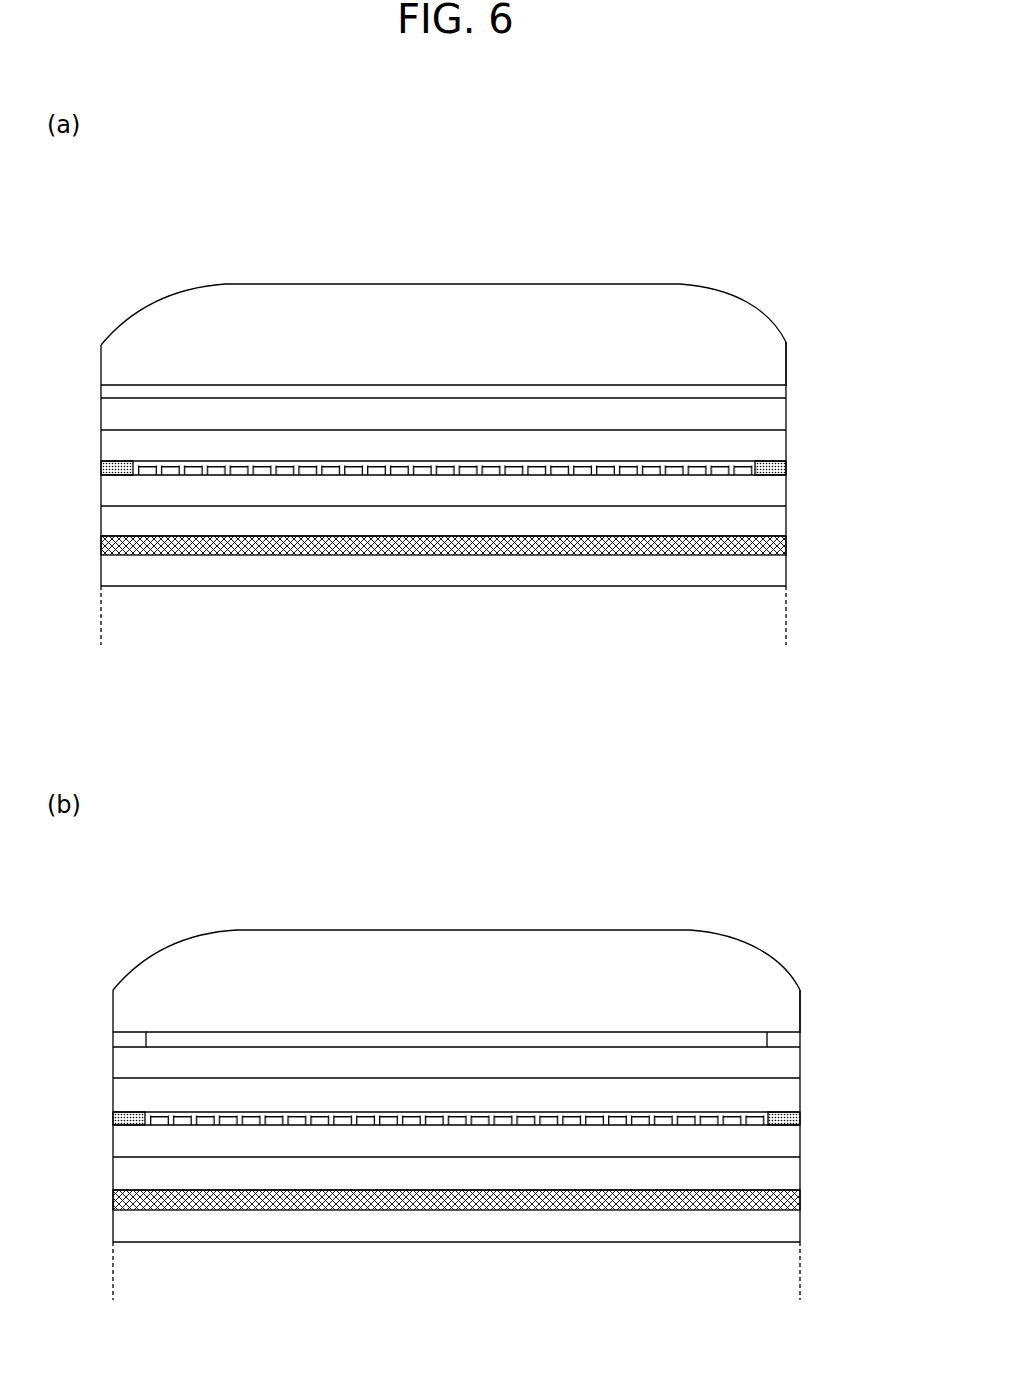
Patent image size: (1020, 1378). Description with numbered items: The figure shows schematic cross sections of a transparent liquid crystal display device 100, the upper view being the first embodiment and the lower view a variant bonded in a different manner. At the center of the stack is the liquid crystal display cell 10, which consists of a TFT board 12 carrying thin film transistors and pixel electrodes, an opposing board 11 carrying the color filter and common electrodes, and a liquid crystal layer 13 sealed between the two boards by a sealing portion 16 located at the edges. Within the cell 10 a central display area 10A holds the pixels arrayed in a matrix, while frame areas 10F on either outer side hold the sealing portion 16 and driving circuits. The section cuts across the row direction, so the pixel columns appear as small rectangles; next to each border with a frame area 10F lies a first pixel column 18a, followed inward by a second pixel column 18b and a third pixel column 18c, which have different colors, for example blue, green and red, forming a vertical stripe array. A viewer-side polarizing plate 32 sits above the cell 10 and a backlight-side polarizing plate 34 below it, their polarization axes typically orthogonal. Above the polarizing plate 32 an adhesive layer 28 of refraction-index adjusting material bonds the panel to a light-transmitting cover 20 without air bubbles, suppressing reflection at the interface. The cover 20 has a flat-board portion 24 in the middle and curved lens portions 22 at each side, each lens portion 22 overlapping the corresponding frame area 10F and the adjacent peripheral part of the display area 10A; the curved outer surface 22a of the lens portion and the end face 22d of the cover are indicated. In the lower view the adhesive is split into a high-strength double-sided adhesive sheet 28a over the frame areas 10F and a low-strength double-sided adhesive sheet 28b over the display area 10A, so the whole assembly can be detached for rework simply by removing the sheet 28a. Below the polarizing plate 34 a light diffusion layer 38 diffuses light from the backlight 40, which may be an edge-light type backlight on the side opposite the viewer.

The liquid crystal display device 100 is at (786, 165).
The light-transmitting cover 20 is at (786, 216).
The lens portion 22 is at (225, 270).
The flat-board portion 24 is at (665, 270).
The outer surface of cover member 22a is at (757, 312).
The end face of cover member 22d is at (786, 342).
The adhesive layer 28 is at (773, 393).
The double-sided adhesive sheet 28a is at (126, 1041).
The double-sided adhesive sheet 28b is at (510, 1030).
The viewer-side polarizing plate 32 is at (104, 413).
The liquid crystal layer 13 is at (737, 460).
The opposing board 11 is at (778, 447).
The sealing portion 16 is at (787, 470).
The TFT board 12 is at (778, 495).
The liquid crystal display cell 10 is at (849, 395).
The first pixel column 18a is at (745, 474).
The second pixel column 18b is at (723, 474).
The third pixel column 18c is at (695, 474).
The backlight-side polarizing plate 34 is at (104, 522).
The light diffusion layer 38 is at (103, 541).
The backlight 40 is at (104, 579).
The frame area 10F is at (135, 627).
The display area 10A is at (747, 639).